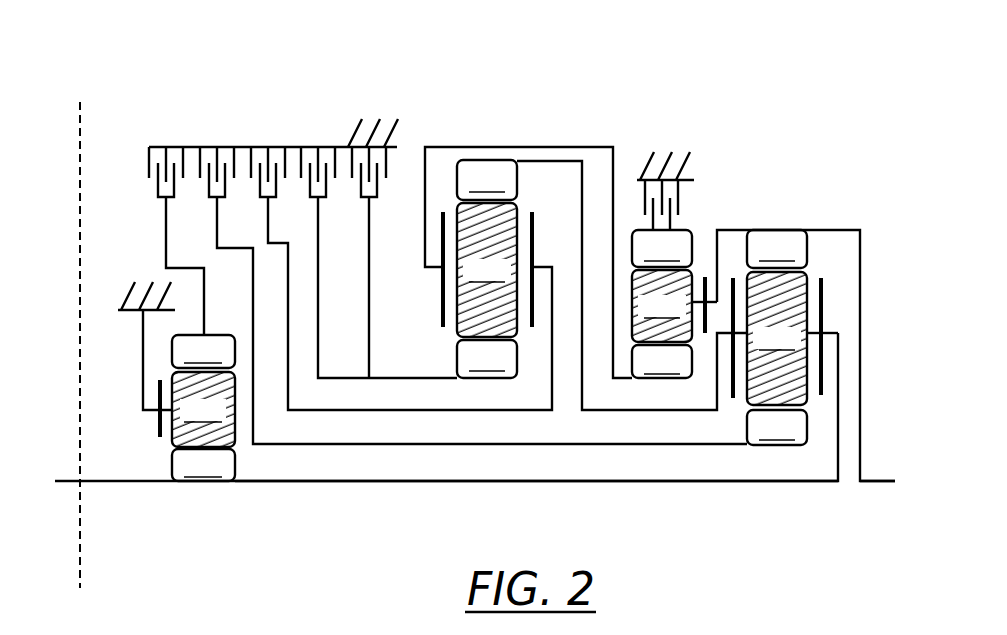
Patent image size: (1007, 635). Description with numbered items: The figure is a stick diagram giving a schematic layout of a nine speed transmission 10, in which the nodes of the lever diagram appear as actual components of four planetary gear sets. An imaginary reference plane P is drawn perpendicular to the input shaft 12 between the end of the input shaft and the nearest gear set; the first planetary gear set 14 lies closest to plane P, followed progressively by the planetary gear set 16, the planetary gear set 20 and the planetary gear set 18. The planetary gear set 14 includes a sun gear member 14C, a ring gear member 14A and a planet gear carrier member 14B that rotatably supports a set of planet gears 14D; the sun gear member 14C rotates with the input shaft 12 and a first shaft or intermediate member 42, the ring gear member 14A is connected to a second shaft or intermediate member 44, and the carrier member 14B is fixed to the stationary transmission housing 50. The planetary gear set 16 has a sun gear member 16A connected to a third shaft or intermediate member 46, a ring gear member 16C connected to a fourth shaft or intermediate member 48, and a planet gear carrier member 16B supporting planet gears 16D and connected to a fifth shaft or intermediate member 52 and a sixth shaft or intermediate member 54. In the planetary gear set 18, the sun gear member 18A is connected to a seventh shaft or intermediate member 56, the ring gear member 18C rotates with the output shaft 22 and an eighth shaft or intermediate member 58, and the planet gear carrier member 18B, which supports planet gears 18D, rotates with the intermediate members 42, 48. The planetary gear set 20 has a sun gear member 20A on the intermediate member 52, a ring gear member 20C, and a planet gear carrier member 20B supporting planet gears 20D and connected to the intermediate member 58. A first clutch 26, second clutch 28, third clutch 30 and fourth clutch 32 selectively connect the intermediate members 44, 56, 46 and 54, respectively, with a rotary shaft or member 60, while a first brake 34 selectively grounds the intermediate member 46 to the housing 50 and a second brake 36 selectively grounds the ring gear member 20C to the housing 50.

The nine speed transmission 10 is at (596, 113).
The input shaft 12 is at (157, 479).
The first planetary gear set 14 is at (176, 434).
The ring gear member 14A is at (203, 351).
The planet gear carrier member 14B is at (160, 431).
The sun gear member 14C is at (203, 465).
The planet gears 14D is at (203, 409).
The second planetary gear set 16 is at (503, 226).
The sun gear member 16A is at (487, 359).
The planet gear carrier member 16B is at (441, 298).
The ring gear member 16C is at (487, 180).
The planet gears 16D is at (487, 270).
The third planetary gear set 18 is at (780, 295).
The sun gear member 18A is at (777, 427).
The planet gear carrier member 18B is at (731, 402).
The ring gear member 18C is at (777, 249).
The planet gears 18D is at (777, 338).
The fourth planetary gear set 20 is at (682, 262).
The sun gear member 20A is at (662, 361).
The planet gear carrier member 20B is at (705, 337).
The ring gear member 20C is at (662, 248).
The planet gears 20D is at (662, 306).
The output shaft 22 is at (873, 480).
The first clutch 26 is at (149, 160).
The second clutch 28 is at (207, 190).
The third clutch 30 is at (326, 190).
The fourth clutch 32 is at (258, 190).
The first brake 34 is at (378, 193).
The second brake 36 is at (645, 216).
The first shaft or intermediate member 42 is at (437, 480).
The second shaft or intermediate member 44 is at (166, 224).
The third shaft or intermediate member 46 is at (351, 378).
The fourth shaft or intermediate member 48 is at (637, 411).
The transmission housing 50 is at (348, 145).
The fifth shaft or intermediate member 52 is at (518, 147).
The sixth shaft or intermediate member 54 is at (409, 409).
The seventh shaft or intermediate member 56 is at (420, 443).
The eighth shaft or intermediate member 58 is at (738, 228).
The rotary shaft or member 60 is at (195, 146).
The imaginary reference plane P is at (80, 122).